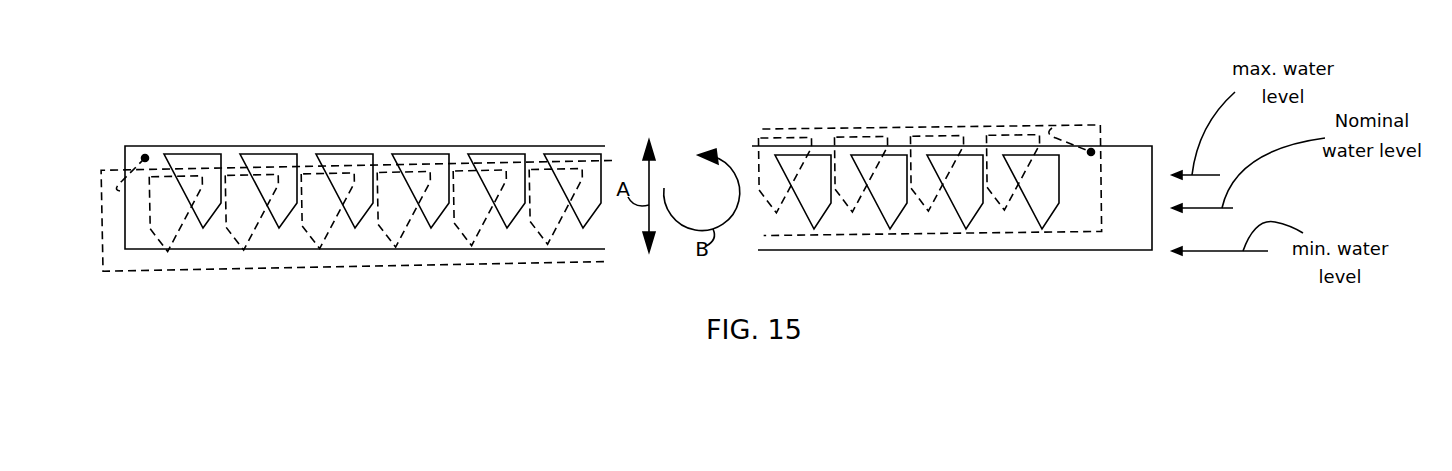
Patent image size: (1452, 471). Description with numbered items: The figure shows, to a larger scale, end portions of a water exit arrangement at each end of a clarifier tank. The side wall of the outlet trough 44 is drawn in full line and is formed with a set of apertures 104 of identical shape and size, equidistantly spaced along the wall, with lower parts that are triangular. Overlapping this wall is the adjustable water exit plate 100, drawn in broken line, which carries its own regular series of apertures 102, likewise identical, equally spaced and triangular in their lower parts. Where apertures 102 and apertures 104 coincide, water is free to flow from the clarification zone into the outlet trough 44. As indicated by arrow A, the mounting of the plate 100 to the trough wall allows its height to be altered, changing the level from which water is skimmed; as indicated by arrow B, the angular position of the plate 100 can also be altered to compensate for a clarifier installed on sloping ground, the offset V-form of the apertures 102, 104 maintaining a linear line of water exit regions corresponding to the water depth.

The outlet trough 44 is at (158, 151).
The water exit plate 100 is at (150, 263).
The apertures 102 is at (250, 237).
The apertures 104 is at (475, 156).